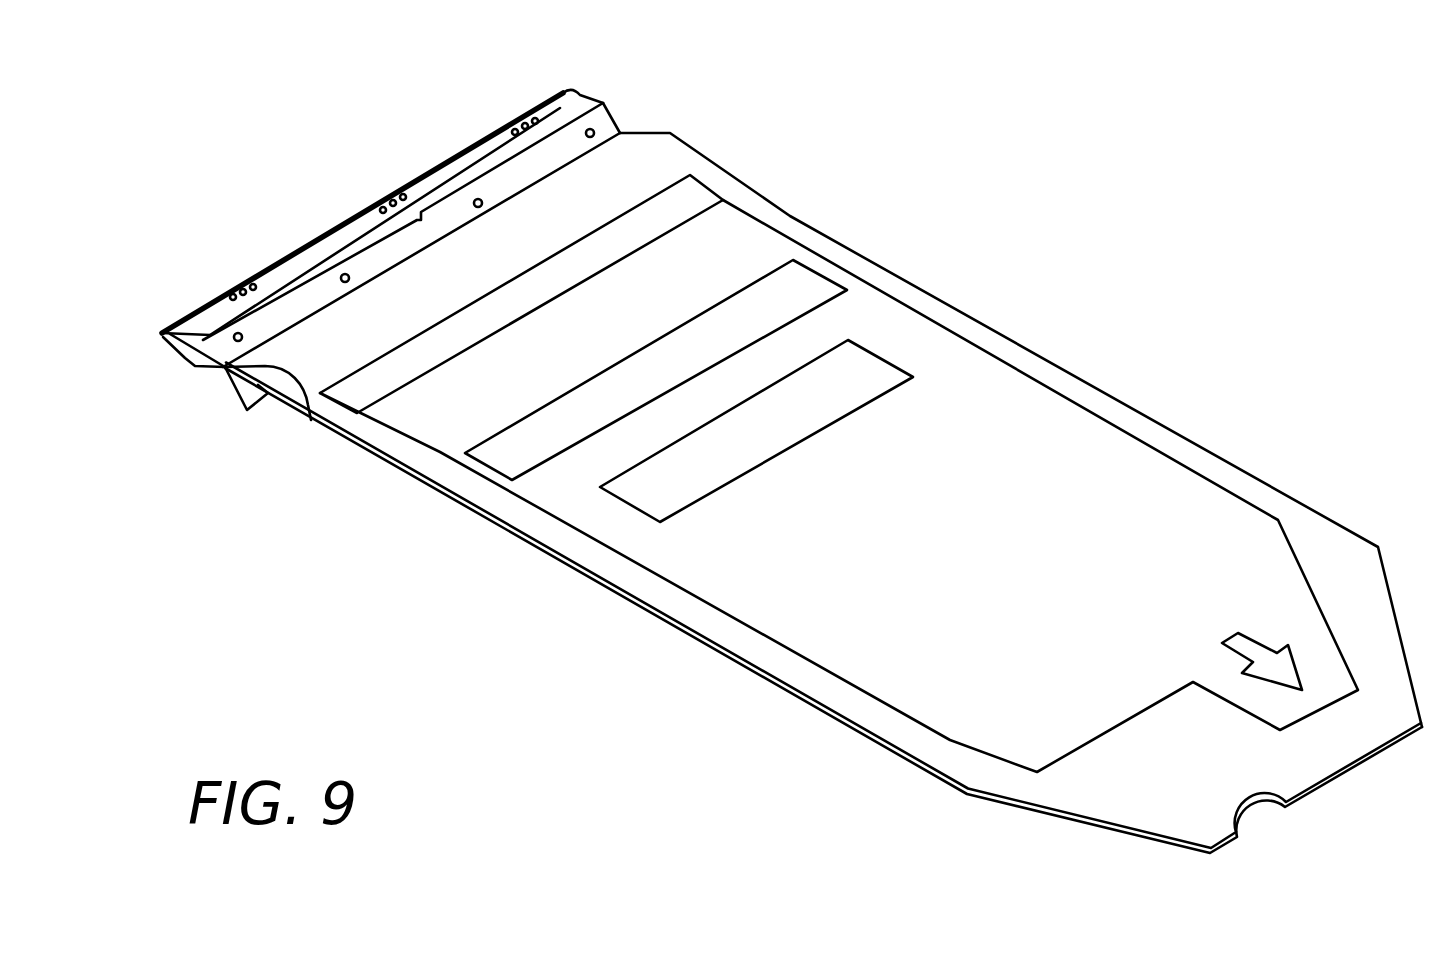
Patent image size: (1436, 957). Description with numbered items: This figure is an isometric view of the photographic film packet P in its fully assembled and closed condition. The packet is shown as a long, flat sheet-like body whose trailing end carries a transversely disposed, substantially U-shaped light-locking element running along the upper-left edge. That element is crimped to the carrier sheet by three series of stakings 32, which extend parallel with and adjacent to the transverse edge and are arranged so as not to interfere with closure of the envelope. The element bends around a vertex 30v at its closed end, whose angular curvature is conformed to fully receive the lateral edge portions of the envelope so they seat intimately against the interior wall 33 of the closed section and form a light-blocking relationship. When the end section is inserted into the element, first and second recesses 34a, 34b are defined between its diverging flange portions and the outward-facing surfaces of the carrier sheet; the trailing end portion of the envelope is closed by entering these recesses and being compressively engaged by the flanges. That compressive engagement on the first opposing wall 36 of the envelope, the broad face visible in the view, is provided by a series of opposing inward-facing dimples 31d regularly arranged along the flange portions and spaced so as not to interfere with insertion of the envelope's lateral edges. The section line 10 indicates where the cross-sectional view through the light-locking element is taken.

The film packet P is at (1283, 486).
The first opposing wall 36 is at (856, 552).
The stakings 32 is at (252, 280).
The interior wall 33 is at (160, 330).
The vertex 30v is at (165, 340).
The second recess 34b is at (230, 395).
The first recess 34a is at (310, 400).
The dimples 31d is at (243, 336).
The section line 10 is at (417, 217).